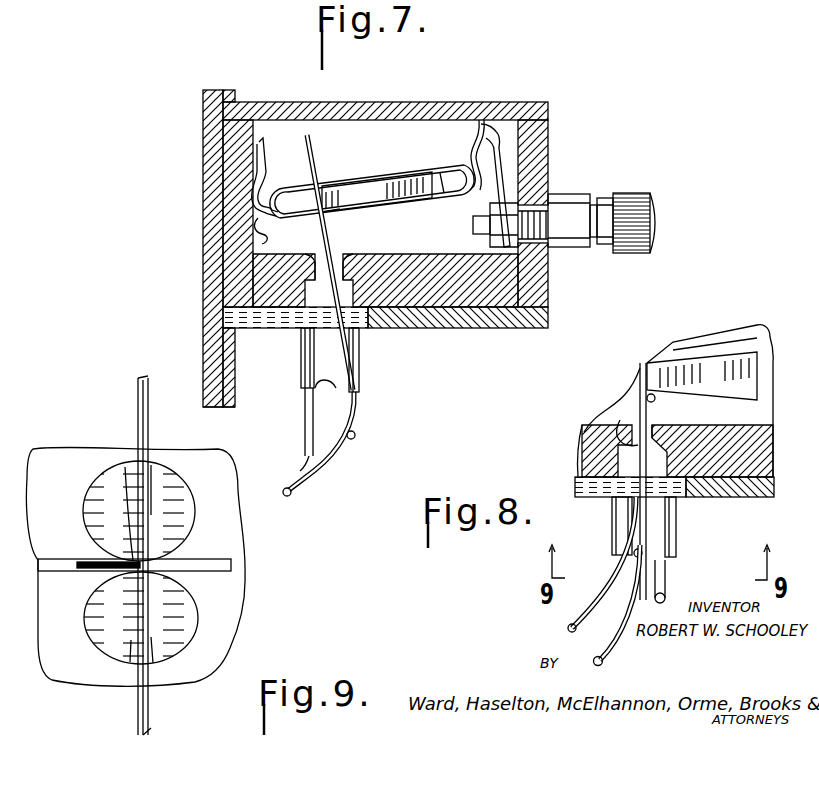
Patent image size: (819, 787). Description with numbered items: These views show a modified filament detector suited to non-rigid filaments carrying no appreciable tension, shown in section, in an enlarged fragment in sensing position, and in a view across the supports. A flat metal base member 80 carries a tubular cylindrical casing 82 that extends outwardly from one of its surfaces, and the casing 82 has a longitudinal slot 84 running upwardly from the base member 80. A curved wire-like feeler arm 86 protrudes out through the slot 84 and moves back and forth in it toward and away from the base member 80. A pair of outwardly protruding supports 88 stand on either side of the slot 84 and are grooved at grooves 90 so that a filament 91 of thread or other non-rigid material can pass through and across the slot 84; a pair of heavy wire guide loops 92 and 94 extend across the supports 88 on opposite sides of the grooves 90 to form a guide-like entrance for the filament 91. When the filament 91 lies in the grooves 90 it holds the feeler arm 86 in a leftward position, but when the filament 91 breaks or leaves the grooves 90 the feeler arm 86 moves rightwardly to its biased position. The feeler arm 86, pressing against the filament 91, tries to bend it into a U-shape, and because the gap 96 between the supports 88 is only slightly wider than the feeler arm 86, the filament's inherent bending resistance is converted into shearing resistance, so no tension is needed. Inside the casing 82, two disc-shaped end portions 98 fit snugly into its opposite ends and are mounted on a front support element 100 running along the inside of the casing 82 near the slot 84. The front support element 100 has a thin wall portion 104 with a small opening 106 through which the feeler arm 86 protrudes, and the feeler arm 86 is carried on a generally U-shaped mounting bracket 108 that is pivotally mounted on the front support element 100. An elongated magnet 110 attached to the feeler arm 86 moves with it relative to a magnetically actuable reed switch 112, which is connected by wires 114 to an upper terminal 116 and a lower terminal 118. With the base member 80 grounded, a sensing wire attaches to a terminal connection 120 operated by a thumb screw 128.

In FIG. 7, the base member 80 is at (214, 352).
In FIG. 7, the casing 82 is at (505, 106).
In FIG. 7, the slot 84 is at (280, 330).
In FIG. 8, the slot 84 is at (690, 495).
In FIG. 7, the feeler arm 86 is at (310, 168).
In FIG. 8, the feeler arm 86 is at (582, 618).
In FIG. 9, the feeler arm 86 is at (86, 556).
In FIG. 7, the supports 88 is at (360, 360).
In FIG. 8, the supports 88 is at (616, 518).
In FIG. 9, the supports 88 is at (100, 480).
In FIG. 7, the grooves 90 is at (322, 398).
In FIG. 8, the grooves 90 is at (648, 552).
In FIG. 9, the grooves 90 is at (146, 492).
In FIG. 8, the filament 91 is at (650, 565).
In FIG. 9, the filament 91 is at (137, 404).
In FIG. 7, the wire guide loop 92 is at (303, 442).
In FIG. 8, the wire guide loop 92 is at (622, 560).
In FIG. 7, the wire guide loop 94 is at (356, 437).
In FIG. 8, the wire guide loop 94 is at (670, 590).
In FIG. 9, the gap 96 is at (218, 560).
In FIG. 7, the end portions 98 is at (232, 148).
In FIG. 7, the front support element 100 is at (437, 265).
In FIG. 8, the front support element 100 is at (760, 442).
In FIG. 7, the thin wall portion 104 is at (338, 258).
In FIG. 8, the thin wall portion 104 is at (658, 428).
In FIG. 7, the opening 106 is at (320, 262).
In FIG. 8, the opening 106 is at (600, 420).
In FIG. 7, the mounting bracket 108 is at (338, 214).
In FIG. 8, the mounting bracket 108 is at (647, 398).
In FIG. 7, the magnet 110 is at (400, 180).
In FIG. 8, the magnet 110 is at (690, 365).
In FIG. 7, the reed switch 112 is at (446, 176).
In FIG. 8, the reed switch 112 is at (745, 345).
In FIG. 7, the wires 114 is at (268, 152).
In FIG. 7, the upper terminal 116 is at (530, 248).
In FIG. 7, the lower terminal 118 is at (256, 228).
In FIG. 7, the terminal connection 120 is at (578, 203).
In FIG. 7, the thumb screw 128 is at (628, 253).